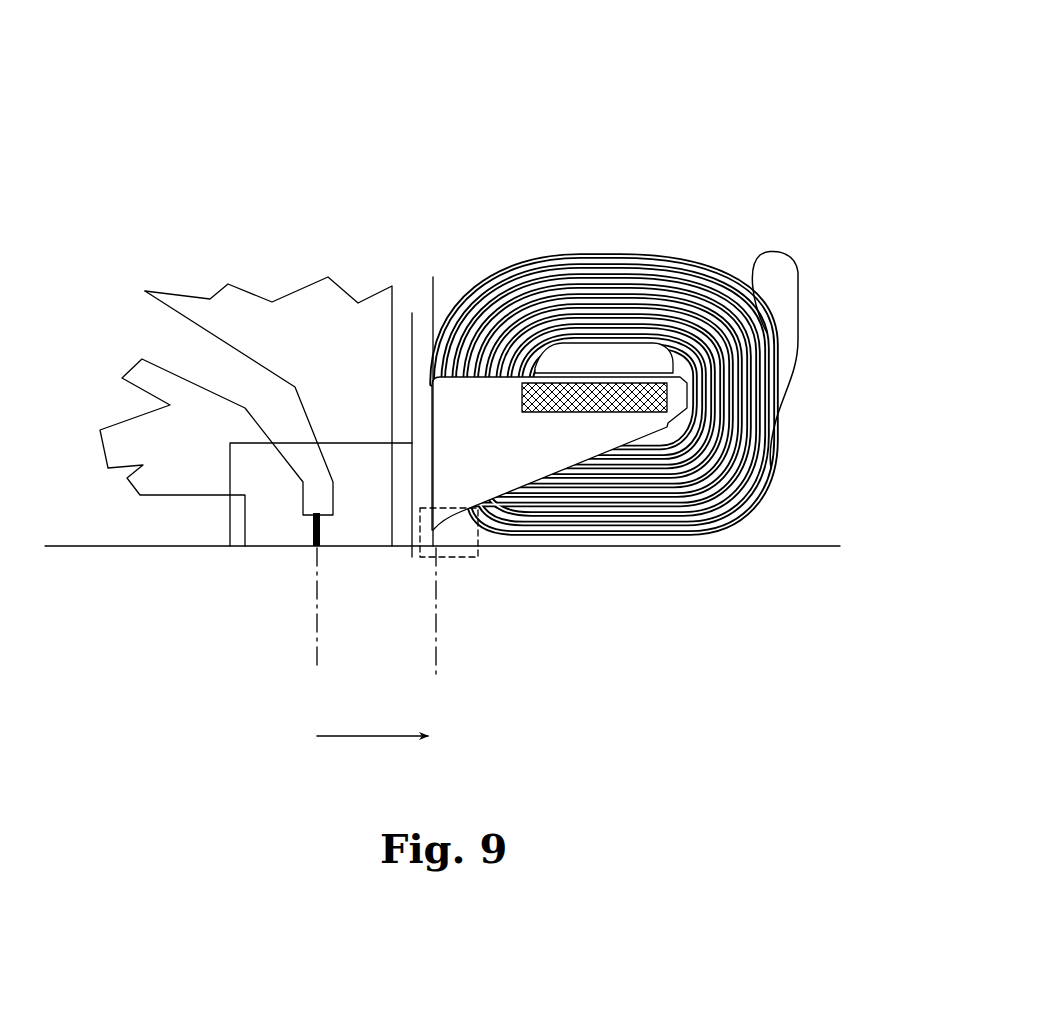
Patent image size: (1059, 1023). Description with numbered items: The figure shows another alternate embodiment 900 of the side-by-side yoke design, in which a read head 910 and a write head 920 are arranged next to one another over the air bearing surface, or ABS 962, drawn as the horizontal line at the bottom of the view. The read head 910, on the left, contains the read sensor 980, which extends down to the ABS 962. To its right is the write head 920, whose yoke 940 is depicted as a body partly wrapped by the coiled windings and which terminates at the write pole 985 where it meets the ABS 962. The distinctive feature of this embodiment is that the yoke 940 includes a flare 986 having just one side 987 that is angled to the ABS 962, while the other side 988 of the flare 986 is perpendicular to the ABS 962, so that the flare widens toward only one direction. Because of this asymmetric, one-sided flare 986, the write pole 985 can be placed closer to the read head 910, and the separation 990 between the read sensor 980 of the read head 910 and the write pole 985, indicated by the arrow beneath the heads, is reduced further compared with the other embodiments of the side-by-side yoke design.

The alternate embodiment 900 is at (613, 77).
The read head 910 is at (271, 288).
The write head 920 is at (578, 240).
The yoke 940 is at (523, 451).
The ABS 962 is at (760, 546).
The read sensor 980 is at (312, 545).
The write pole 985 is at (435, 546).
The flare 986 is at (457, 557).
The one side of the flare 987 is at (458, 529).
The other side of the flare 988 is at (441, 539).
The separation 990 is at (370, 736).